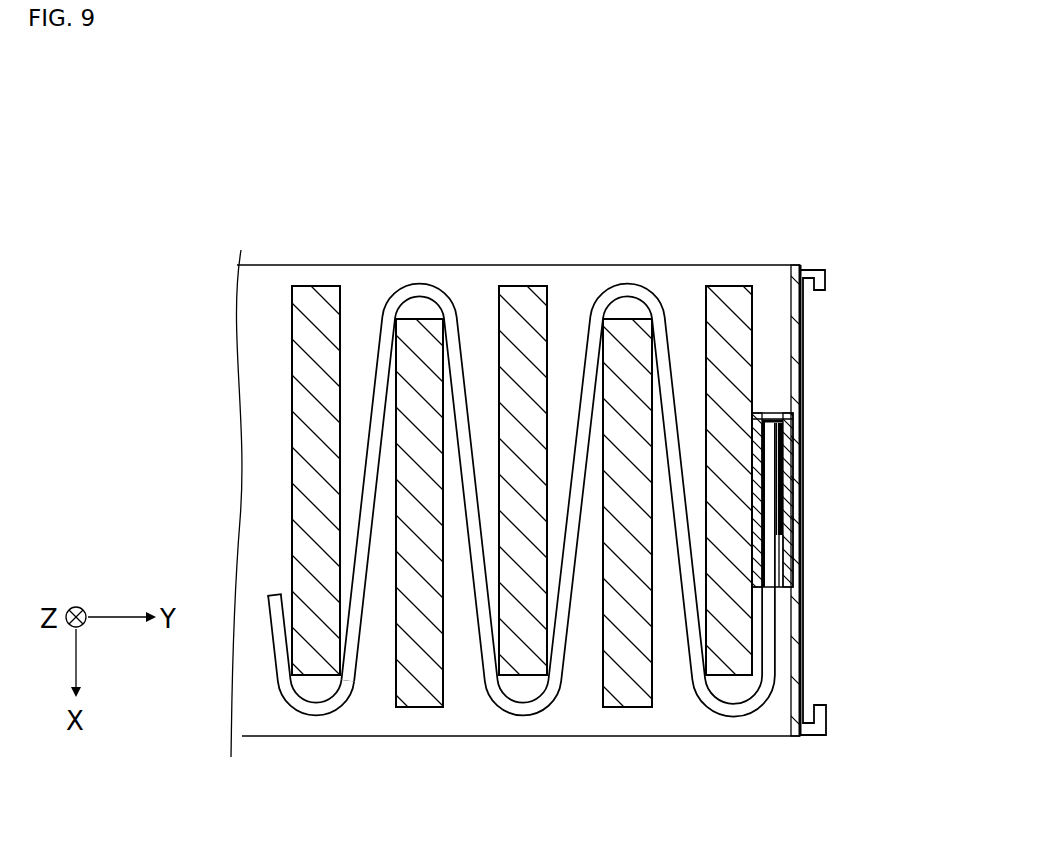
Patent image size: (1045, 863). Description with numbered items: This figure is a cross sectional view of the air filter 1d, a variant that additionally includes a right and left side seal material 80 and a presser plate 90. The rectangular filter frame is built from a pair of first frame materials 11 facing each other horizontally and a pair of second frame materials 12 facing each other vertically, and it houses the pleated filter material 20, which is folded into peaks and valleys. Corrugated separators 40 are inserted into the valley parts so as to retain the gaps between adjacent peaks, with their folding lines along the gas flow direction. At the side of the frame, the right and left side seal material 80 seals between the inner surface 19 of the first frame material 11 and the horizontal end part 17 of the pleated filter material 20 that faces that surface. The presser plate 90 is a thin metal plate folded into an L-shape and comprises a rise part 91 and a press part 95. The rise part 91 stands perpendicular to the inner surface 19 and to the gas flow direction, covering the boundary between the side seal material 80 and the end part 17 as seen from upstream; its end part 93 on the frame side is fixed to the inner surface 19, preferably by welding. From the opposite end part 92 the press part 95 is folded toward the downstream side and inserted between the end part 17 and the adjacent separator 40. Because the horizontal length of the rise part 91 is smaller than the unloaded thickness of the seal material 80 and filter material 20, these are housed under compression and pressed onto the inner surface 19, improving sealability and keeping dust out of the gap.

The air filter 1d is at (336, 135).
The first frame material 11 is at (808, 730).
The second frame material 12 is at (462, 708).
The inner surface 19 is at (788, 712).
The pleated filter material 20 is at (313, 716).
The separator 40 is at (619, 702).
The presser plate 90 is at (767, 401).
The rise part 91 is at (781, 413).
The end part 92 is at (753, 412).
The end part 93 is at (792, 413).
The end part 17 is at (772, 463).
The right and left side seal material 80 is at (783, 512).
The press part 95 is at (757, 555).